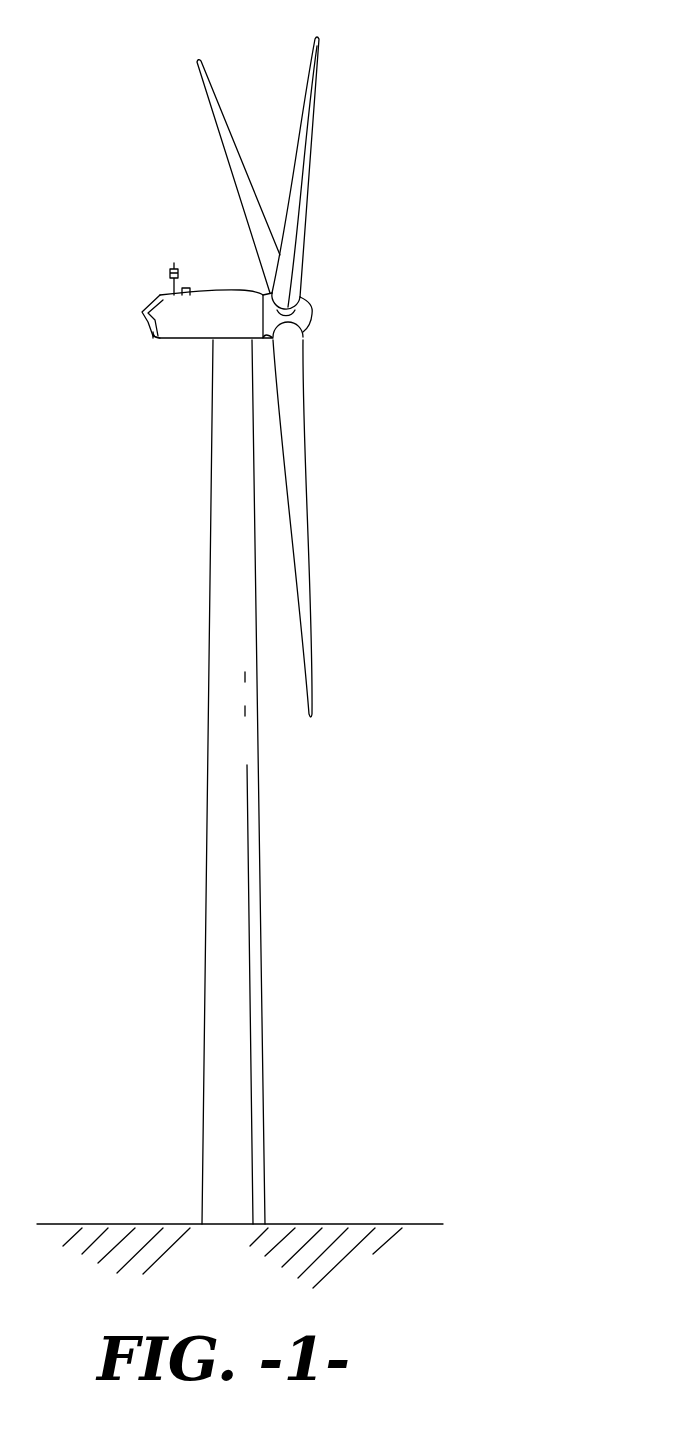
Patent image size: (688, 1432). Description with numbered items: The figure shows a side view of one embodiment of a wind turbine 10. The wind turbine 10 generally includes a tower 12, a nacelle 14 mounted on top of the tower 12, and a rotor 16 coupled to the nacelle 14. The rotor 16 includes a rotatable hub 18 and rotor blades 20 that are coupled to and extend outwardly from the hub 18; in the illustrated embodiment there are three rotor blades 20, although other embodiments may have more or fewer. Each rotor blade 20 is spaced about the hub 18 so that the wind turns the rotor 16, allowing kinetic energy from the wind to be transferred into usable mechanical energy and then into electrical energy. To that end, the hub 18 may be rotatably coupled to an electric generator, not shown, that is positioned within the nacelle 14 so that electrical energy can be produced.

The wind turbine 10 is at (424, 117).
The tower 12 is at (218, 902).
The nacelle 14 is at (188, 340).
The rotor 16 is at (322, 284).
The rotatable hub 18 is at (310, 320).
The rotor blade 20 is at (307, 82).